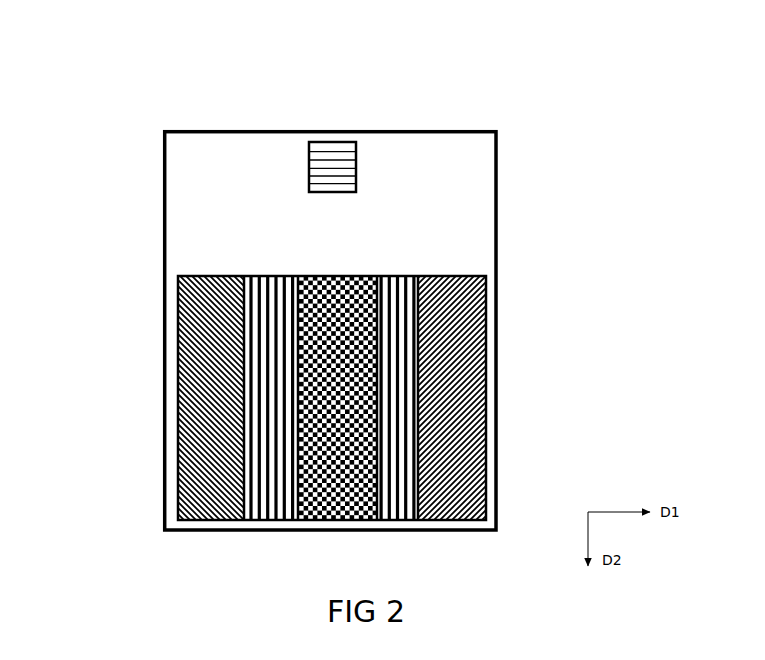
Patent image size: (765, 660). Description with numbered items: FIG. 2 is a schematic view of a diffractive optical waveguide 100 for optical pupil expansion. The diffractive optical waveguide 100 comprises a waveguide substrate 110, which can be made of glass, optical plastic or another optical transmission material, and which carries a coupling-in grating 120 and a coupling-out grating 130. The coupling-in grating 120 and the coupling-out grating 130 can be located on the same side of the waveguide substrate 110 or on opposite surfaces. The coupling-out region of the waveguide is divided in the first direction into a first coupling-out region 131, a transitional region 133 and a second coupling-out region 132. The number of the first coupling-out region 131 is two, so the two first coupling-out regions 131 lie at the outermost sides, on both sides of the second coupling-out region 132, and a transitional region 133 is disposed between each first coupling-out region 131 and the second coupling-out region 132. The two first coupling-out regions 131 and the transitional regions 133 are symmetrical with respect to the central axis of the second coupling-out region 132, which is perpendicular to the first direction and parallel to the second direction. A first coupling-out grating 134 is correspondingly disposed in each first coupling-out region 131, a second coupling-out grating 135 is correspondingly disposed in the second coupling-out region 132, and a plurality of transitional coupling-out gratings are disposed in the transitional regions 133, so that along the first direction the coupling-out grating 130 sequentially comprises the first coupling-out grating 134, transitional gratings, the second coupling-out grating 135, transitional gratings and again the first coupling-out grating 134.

The diffractive optical waveguide 100 is at (230, 85).
The waveguide substrate 110 is at (445, 162).
The coupling-in grating 120 is at (337, 165).
The coupling-out grating 130 is at (282, 272).
The first coupling-out region 131 is at (215, 272).
The second coupling-out region 132 is at (342, 272).
The transitional region 133 is at (268, 272).
The first coupling-out grating 134 is at (190, 372).
The second coupling-out grating 135 is at (375, 438).